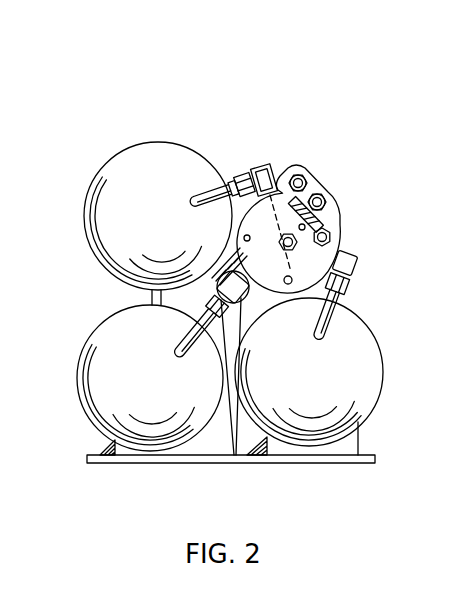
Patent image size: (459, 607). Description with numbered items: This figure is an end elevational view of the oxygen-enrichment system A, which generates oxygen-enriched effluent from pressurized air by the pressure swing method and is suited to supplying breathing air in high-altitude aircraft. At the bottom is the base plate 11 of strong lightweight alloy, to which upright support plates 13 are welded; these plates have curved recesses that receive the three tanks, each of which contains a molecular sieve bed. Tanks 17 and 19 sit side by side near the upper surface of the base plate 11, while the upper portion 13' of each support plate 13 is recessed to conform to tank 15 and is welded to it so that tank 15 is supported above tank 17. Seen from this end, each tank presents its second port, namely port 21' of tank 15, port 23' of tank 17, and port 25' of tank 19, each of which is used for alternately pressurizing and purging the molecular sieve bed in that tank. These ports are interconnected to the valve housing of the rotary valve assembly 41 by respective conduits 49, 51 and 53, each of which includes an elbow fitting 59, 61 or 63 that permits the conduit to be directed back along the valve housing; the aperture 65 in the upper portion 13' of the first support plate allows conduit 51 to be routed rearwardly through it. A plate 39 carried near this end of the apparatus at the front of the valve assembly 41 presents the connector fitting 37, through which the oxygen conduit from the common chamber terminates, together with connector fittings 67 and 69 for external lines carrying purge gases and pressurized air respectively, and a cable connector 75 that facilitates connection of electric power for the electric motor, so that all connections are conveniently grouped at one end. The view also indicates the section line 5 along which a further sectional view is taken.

The system A is at (128, 106).
The base plate 11 is at (299, 464).
The upright support plates 13 is at (264, 439).
The upper portion of support plate 13' is at (100, 299).
The tank 15 is at (105, 165).
The tank 17 is at (78, 396).
The tank 19 is at (383, 363).
The port 21' is at (220, 143).
The port 23' is at (166, 328).
The port 25' is at (375, 315).
The connector fitting 37 is at (331, 188).
The plate 39 is at (336, 210).
The rotary valve assembly 41 is at (359, 151).
The conduit 49 is at (262, 165).
The conduit 51 is at (242, 376).
The conduit 53 is at (349, 279).
The elbow fitting 59 is at (297, 168).
The elbow fitting 61 is at (238, 307).
The elbow fitting 63 is at (354, 256).
The aperture 65 is at (243, 283).
The connector fitting 67 is at (323, 172).
The connector fitting 69 is at (243, 222).
The cable connector 75 is at (343, 223).
The section line 5- 5 is at (268, 188).